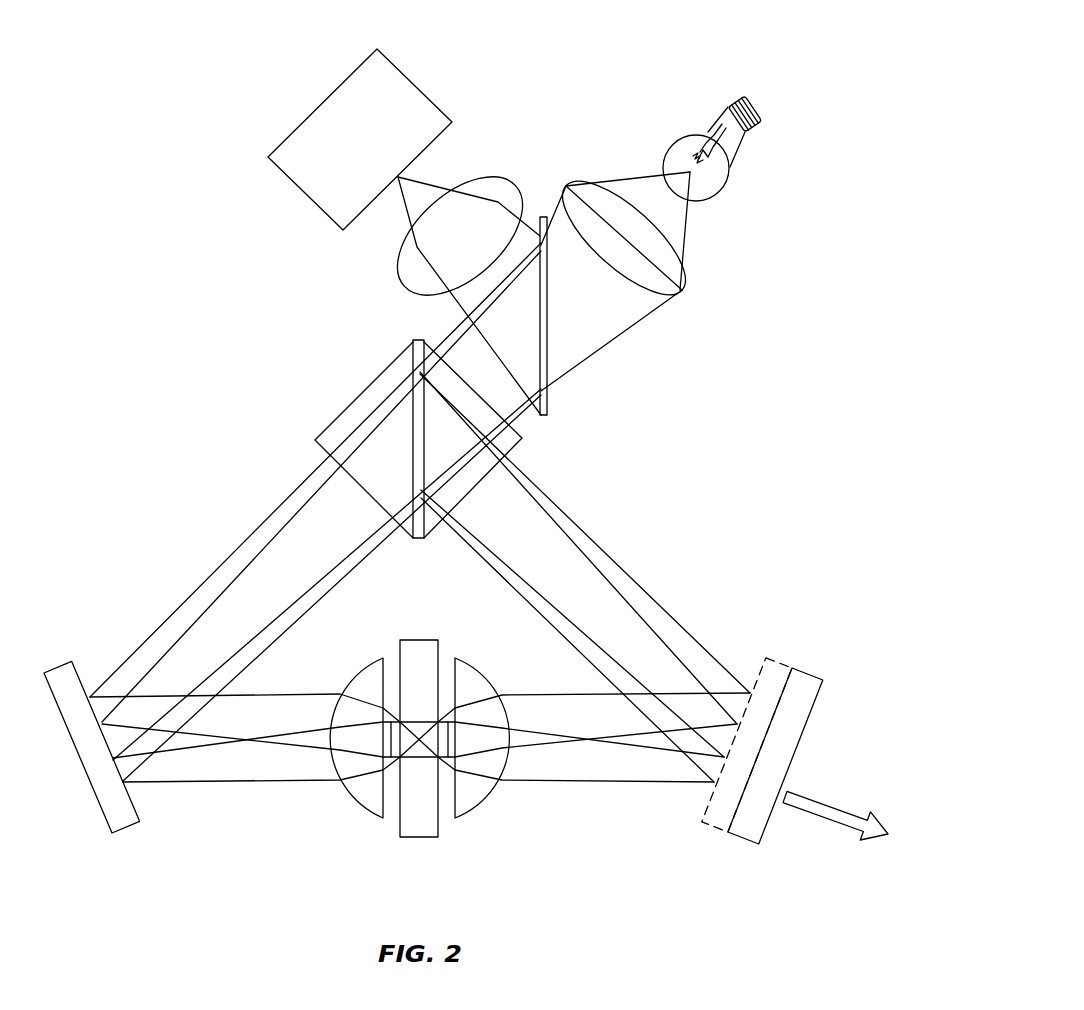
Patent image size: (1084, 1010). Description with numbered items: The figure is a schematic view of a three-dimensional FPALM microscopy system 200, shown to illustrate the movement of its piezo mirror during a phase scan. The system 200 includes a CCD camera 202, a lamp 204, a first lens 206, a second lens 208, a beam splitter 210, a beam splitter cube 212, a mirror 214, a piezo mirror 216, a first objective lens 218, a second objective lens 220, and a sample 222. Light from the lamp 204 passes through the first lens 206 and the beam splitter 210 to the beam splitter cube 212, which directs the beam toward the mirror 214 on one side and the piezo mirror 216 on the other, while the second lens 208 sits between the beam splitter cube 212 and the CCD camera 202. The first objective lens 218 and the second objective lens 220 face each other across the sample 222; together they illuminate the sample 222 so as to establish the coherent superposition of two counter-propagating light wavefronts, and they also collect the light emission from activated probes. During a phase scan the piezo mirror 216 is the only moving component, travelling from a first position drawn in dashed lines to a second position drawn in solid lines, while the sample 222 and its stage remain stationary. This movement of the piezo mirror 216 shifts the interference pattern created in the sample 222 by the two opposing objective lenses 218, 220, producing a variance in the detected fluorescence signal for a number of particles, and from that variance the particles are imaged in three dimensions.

The 3D FPALM microscopy system 200 is at (654, 45).
The CCD camera 202 is at (338, 82).
The lamp 204 is at (735, 166).
The first lens 206 is at (676, 297).
The second lens 208 is at (512, 176).
The beam splitter 210 is at (550, 410).
The beam splitter cube 212 is at (355, 402).
The mirror 214 is at (93, 792).
The piezo mirror 216 is at (740, 838).
The first objective lens 218 is at (354, 800).
The second objective lens 220 is at (486, 798).
The sample 222 is at (420, 760).